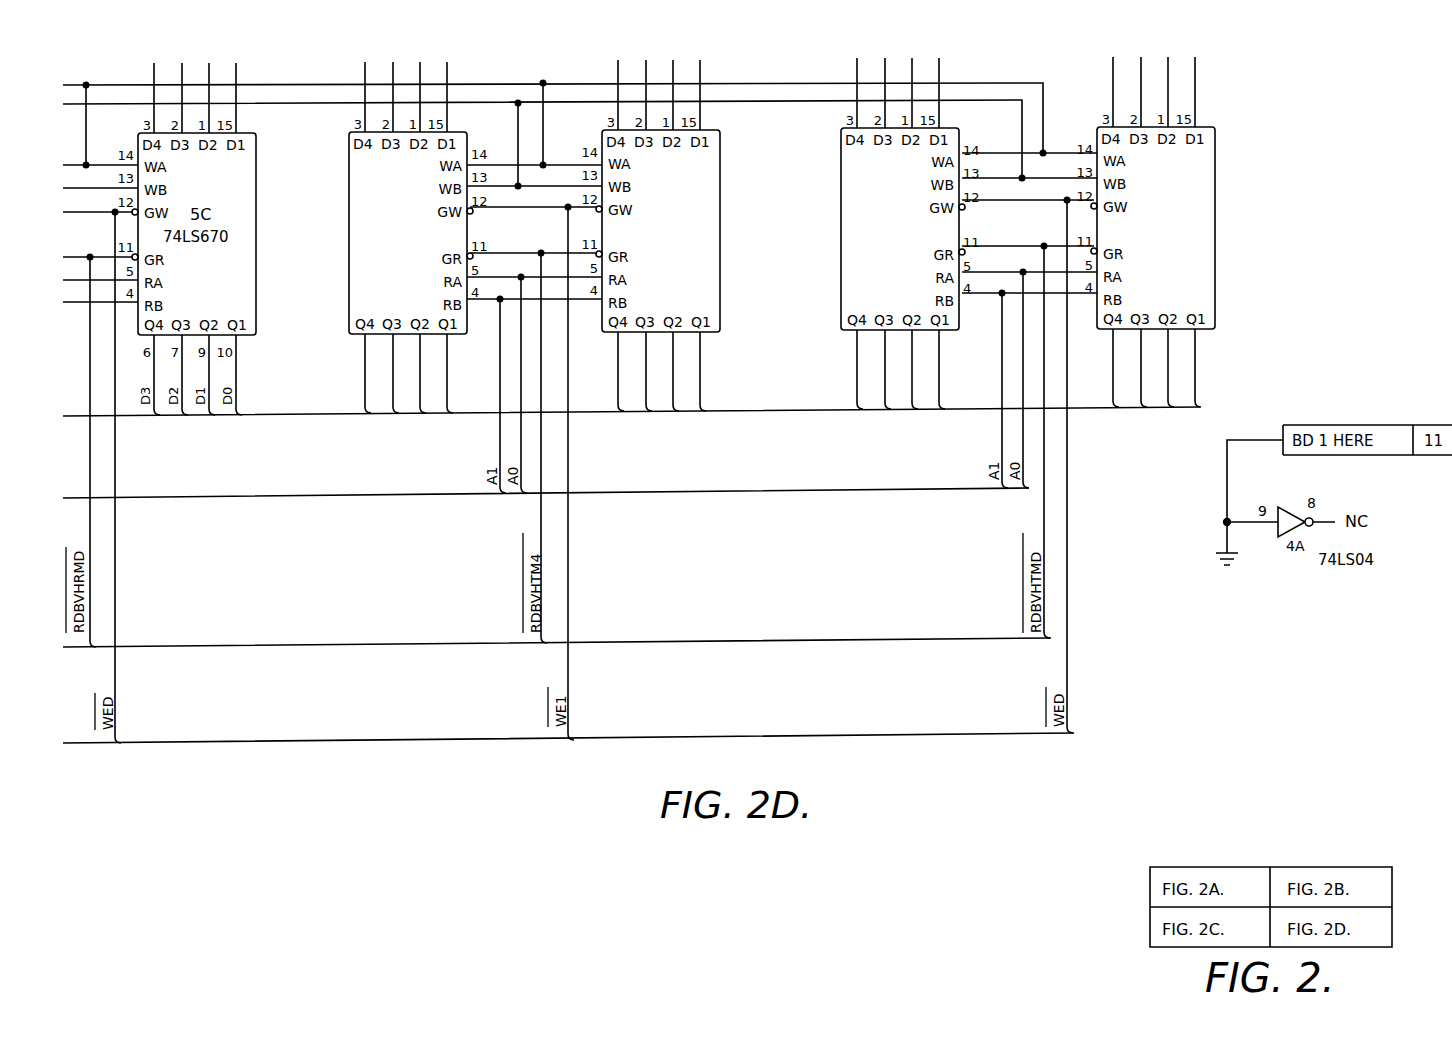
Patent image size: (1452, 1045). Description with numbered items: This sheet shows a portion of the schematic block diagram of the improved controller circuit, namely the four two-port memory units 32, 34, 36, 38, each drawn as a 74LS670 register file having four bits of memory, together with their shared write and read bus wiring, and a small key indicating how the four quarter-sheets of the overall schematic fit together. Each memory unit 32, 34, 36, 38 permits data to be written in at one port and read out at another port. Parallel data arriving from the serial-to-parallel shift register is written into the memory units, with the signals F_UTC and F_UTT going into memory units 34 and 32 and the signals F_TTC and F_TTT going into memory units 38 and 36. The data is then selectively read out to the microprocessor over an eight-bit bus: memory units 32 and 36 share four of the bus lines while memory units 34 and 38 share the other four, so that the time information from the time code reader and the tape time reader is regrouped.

The memory unit 38 is at (349, 209).
The memory unit 36 is at (720, 221).
The memory unit 34 is at (841, 258).
The memory unit 32 is at (1217, 223).